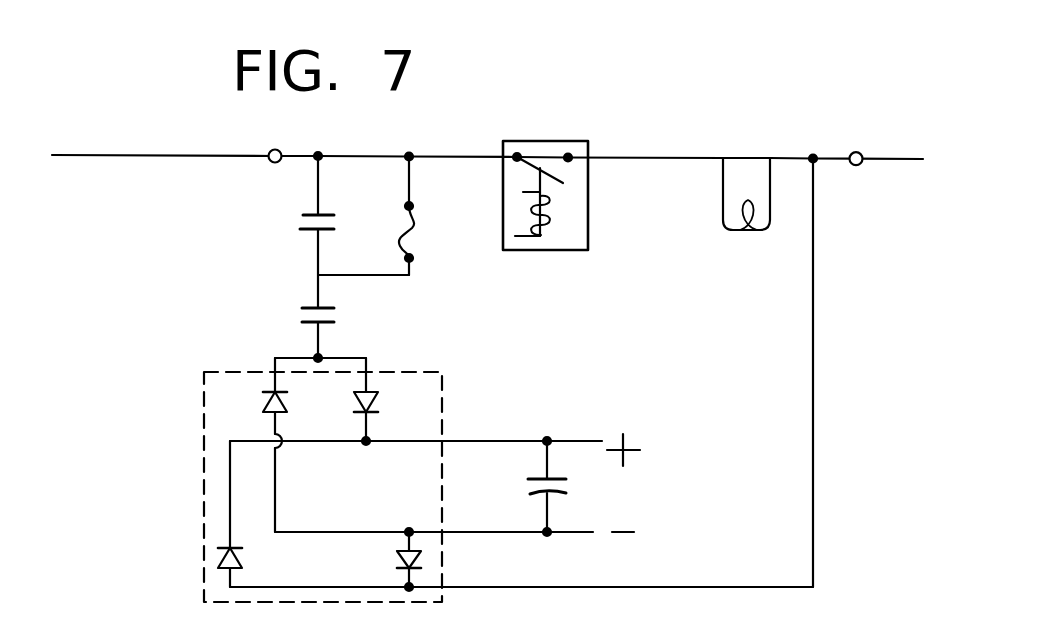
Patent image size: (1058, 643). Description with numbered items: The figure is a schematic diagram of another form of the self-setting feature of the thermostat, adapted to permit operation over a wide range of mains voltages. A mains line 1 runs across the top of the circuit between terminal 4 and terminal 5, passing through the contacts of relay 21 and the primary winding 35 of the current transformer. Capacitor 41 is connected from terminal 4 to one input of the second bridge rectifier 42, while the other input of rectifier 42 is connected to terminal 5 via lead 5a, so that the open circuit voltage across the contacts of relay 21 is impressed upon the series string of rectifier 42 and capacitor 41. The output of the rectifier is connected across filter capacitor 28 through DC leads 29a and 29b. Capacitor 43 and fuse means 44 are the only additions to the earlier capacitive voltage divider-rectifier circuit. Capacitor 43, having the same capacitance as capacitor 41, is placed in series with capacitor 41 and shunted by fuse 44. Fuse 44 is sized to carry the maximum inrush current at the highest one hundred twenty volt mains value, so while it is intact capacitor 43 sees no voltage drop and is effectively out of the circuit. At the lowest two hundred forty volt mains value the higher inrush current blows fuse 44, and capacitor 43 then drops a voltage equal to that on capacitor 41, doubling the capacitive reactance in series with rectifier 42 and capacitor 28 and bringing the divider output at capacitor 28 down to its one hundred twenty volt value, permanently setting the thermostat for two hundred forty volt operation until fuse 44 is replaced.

The mains line 1 is at (100, 153).
The terminal 4 is at (269, 162).
The terminal 5 is at (859, 166).
The lead 5a is at (687, 586).
The relay 21 is at (588, 239).
The filter capacitor 28 is at (568, 495).
The DC lead 29a is at (510, 441).
The DC lead 29b is at (500, 532).
The primary winding 35 is at (759, 233).
The capacitor 41 is at (300, 309).
The second bridge rectifier 42 is at (442, 407).
The capacitor 43 is at (301, 232).
The fuse means 44 is at (417, 228).